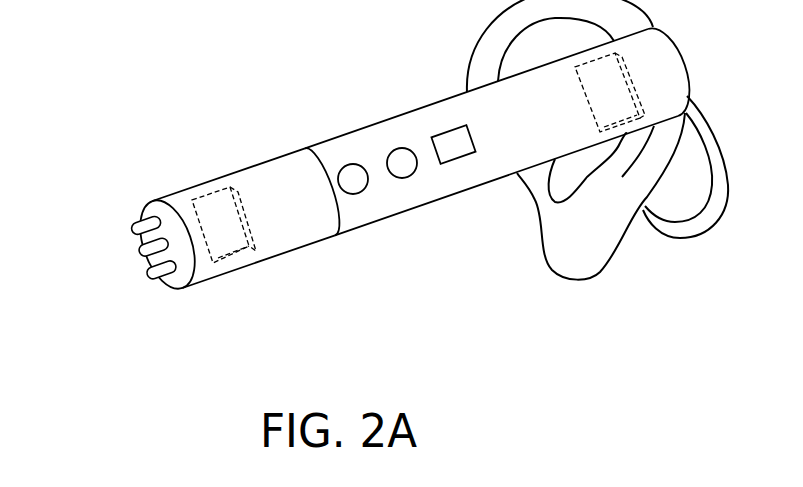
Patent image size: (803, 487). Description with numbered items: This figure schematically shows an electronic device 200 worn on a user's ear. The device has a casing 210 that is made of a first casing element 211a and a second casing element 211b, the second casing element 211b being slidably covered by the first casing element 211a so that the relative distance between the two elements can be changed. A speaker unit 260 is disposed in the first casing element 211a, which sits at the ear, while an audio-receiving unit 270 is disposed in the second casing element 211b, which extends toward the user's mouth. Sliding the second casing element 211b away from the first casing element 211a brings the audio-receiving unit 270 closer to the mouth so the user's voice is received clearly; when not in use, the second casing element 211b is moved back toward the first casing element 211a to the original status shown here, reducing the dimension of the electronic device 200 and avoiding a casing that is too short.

The electronic device 200 is at (408, 172).
The casing 210 is at (410, 156).
The first casing element 211a is at (338, 137).
The second casing element 211b is at (263, 163).
The speaker unit 260 is at (627, 80).
The audio-receiving unit 270 is at (246, 252).